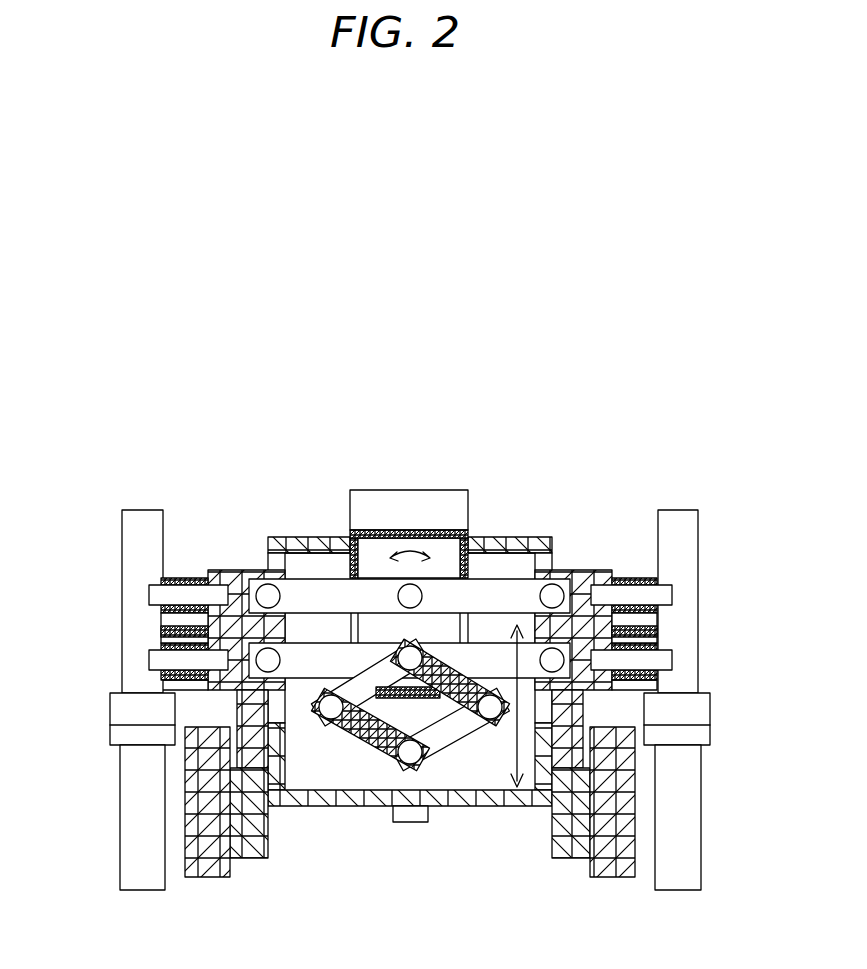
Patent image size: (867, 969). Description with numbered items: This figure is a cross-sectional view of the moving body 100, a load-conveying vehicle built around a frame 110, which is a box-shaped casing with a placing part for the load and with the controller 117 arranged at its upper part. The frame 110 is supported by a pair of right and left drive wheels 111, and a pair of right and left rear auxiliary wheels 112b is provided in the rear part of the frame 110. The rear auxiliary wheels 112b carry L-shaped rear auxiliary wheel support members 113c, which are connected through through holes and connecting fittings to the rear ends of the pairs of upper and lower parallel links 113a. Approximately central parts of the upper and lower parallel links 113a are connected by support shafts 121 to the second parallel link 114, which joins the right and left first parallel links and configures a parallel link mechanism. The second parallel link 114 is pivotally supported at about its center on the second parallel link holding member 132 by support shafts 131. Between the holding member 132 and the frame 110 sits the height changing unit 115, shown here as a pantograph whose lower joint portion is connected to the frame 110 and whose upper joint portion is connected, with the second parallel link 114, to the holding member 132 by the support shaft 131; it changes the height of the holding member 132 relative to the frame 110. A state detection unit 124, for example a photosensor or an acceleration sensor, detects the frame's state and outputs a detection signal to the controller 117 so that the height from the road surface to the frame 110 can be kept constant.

The moving body 100 is at (162, 406).
The frame 110 is at (340, 799).
The drive wheels 111 is at (212, 856).
The rear auxiliary wheels 112b is at (143, 871).
The parallel links 113a is at (200, 578).
The rear auxiliary wheel support members 113c is at (132, 519).
The second parallel link 114 is at (335, 594).
The height changing unit 115 is at (463, 729).
The controller 117 is at (415, 498).
The support shafts 121 is at (672, 658).
The state detection unit 124 is at (413, 822).
The support shafts 131 is at (412, 656).
The second parallel link holding member 132 is at (383, 529).